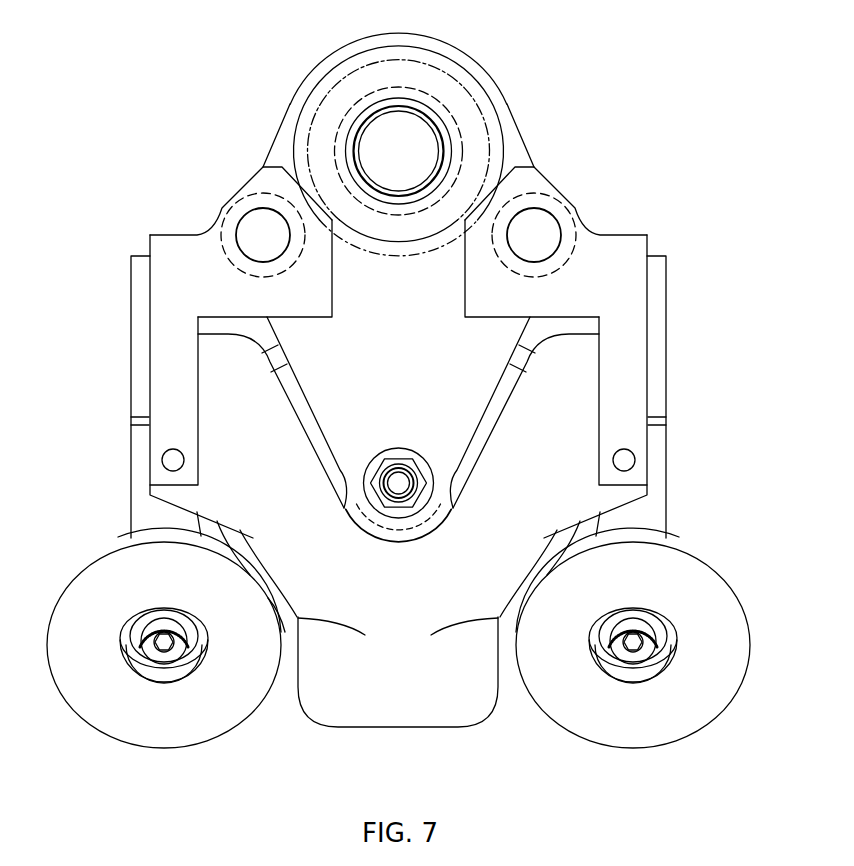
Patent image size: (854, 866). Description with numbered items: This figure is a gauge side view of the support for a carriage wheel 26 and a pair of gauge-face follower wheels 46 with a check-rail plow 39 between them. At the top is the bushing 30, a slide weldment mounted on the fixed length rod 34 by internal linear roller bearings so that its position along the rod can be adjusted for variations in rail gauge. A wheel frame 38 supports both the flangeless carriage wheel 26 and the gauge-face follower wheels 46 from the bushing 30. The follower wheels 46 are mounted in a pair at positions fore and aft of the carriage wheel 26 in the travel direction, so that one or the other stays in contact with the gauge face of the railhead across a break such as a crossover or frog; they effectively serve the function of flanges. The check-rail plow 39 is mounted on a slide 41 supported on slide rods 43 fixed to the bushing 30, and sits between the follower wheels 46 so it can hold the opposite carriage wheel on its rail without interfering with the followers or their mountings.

The carriage wheel 26 is at (285, 632).
The bushing 30 is at (312, 73).
The fixed length rod 34 is at (403, 137).
The wheel frame 38 is at (131, 509).
The check-rail plow 39 is at (428, 727).
The slide 41 is at (170, 290).
The slide rods 43 is at (256, 227).
The gauge-face follower wheels 46 is at (110, 735).